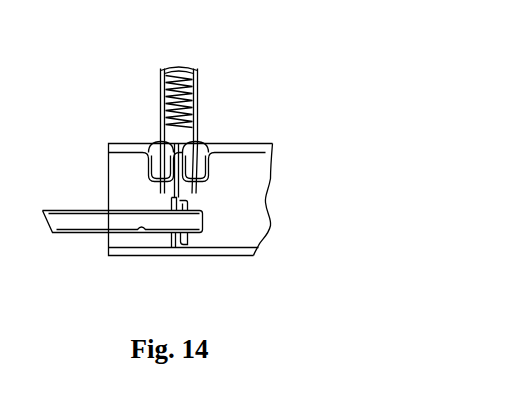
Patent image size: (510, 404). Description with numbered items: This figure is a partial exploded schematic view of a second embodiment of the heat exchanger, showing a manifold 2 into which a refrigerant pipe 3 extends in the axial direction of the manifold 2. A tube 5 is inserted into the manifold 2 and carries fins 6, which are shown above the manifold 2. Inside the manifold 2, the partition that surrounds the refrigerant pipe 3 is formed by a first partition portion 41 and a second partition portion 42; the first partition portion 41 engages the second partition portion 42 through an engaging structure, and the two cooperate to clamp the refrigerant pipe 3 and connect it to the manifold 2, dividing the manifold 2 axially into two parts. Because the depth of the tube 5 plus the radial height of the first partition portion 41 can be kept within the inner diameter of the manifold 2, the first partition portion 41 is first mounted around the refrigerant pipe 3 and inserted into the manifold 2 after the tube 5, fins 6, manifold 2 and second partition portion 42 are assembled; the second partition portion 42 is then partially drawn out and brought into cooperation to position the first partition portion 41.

The manifold 2 is at (232, 148).
The refrigerant pipe 3 is at (88, 212).
The tube 5 is at (195, 90).
The fins 6 is at (168, 122).
The first partition portion 41 is at (185, 235).
The second partition portion 42 is at (182, 193).